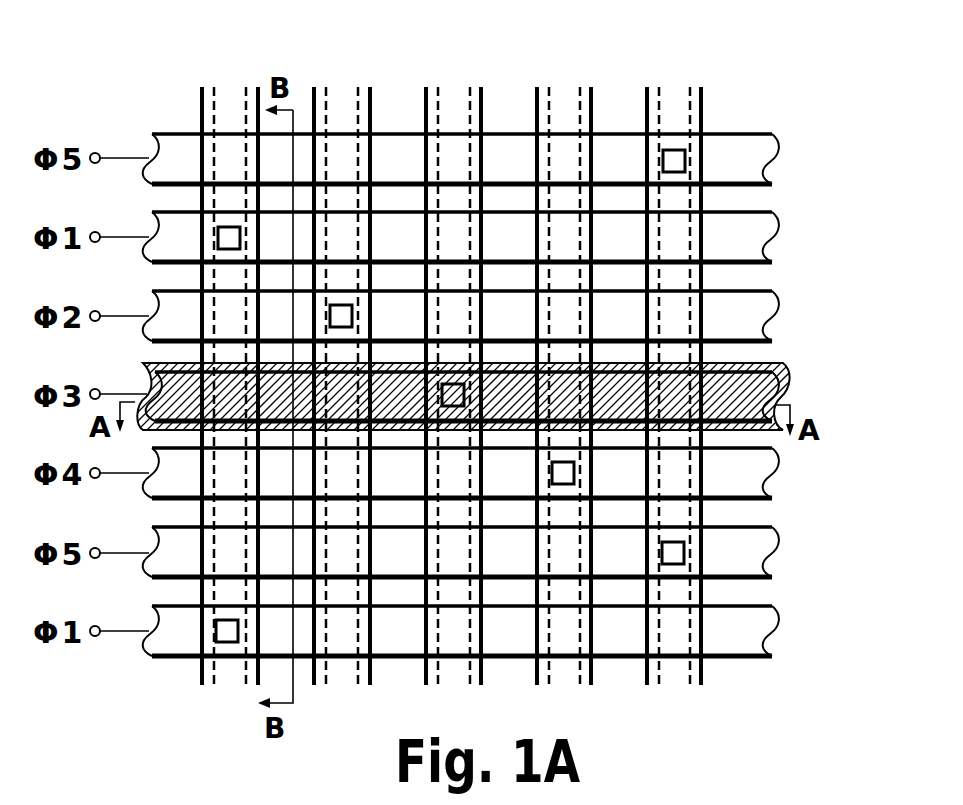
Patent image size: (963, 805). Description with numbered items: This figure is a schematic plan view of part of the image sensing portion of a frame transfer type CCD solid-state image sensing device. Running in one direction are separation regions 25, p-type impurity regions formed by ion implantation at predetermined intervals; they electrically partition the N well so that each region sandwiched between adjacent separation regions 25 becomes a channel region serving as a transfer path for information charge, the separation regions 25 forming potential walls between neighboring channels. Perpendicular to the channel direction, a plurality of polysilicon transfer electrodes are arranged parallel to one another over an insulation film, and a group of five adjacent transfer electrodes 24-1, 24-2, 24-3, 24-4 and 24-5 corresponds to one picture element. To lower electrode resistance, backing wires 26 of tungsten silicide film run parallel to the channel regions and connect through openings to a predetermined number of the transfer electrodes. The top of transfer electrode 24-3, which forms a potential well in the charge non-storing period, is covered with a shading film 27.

The transfer electrode 24-1 is at (818, 631).
The transfer electrode 24-2 is at (762, 316).
The transfer electrode 24-3 is at (772, 395).
The transfer electrode 24-4 is at (762, 473).
The transfer electrode 24-5 is at (818, 553).
The separation region 25 is at (227, 88).
The backing wire 26 is at (210, 88).
The shading film 27 is at (784, 368).